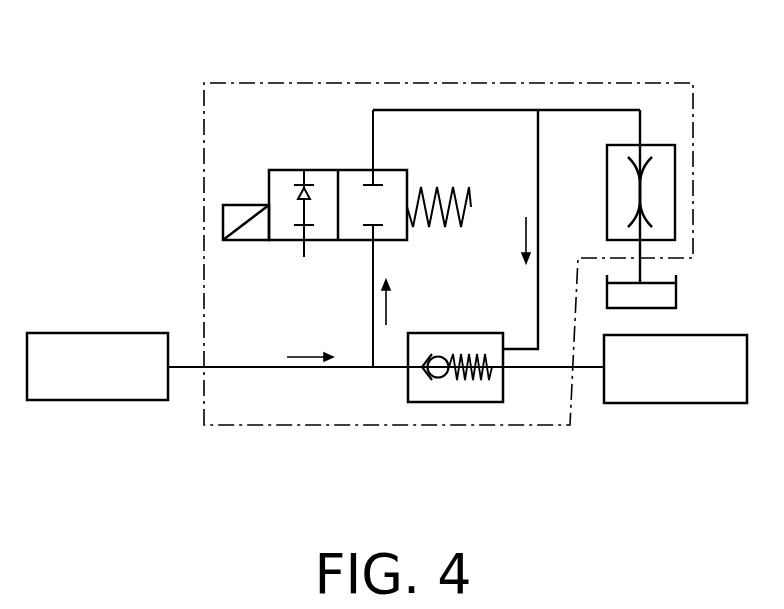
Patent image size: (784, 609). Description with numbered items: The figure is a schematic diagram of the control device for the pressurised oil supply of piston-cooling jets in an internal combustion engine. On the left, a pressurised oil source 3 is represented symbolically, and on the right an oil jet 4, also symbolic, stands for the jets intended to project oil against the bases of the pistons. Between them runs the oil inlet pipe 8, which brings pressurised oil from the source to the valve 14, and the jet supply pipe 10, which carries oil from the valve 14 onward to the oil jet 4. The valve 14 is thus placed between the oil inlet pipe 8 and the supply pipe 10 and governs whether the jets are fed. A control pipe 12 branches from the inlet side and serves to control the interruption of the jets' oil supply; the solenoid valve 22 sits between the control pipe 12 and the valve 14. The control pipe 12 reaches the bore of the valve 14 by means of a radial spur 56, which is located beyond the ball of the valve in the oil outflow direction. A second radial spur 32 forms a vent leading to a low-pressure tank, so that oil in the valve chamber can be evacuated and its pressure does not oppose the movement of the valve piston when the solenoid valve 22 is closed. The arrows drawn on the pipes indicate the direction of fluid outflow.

The pressurised oil source 3 is at (87, 348).
The oil jet 4 is at (694, 348).
The pressurised oil inlet pipe 8 is at (268, 367).
The jet supply pipe 10 is at (592, 370).
The control pipe 12 is at (373, 299).
The valve 14 is at (453, 412).
The solenoid valve 22 is at (337, 147).
The second radial spur 32 is at (612, 110).
The radial spur 56 is at (537, 142).